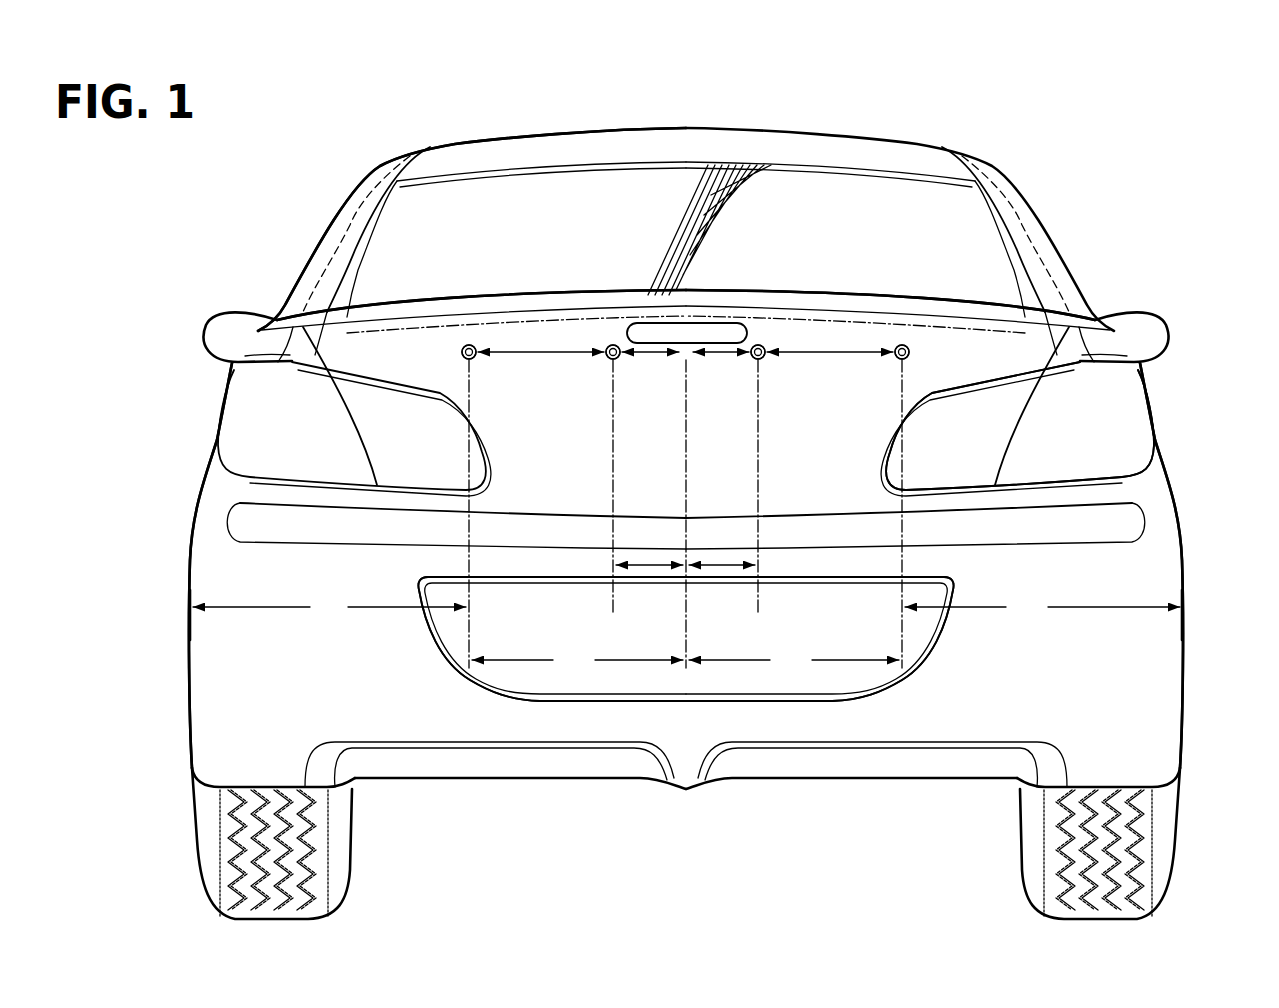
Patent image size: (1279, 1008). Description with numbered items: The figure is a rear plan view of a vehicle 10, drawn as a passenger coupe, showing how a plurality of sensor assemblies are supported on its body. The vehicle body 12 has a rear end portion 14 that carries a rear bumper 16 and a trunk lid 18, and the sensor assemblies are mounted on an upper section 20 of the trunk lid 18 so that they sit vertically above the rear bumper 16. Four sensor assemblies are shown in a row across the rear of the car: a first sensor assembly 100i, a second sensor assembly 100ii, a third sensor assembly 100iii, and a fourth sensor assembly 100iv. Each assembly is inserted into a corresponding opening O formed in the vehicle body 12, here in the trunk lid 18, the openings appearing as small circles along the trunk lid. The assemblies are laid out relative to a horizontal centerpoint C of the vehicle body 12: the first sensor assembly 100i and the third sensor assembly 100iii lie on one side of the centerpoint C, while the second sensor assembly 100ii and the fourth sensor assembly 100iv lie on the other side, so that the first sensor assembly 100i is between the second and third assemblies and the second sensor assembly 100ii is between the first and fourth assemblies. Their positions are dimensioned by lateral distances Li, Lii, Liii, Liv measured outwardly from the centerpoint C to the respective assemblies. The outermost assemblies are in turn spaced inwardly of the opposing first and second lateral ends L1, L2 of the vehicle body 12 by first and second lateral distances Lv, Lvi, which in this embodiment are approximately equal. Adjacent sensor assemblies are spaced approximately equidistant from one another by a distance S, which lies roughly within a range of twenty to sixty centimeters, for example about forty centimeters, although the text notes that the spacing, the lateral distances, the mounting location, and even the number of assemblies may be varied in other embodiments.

The vehicle 10 is at (1017, 110).
The vehicle body 12 is at (183, 506).
The rear end portion 14 is at (1203, 705).
The rear bumper 16 is at (940, 710).
The trunk lid 18 is at (957, 297).
The upper section 20 is at (970, 350).
The first sensor assembly 100i is at (603, 340).
The second sensor assembly 100ii is at (747, 335).
The third sensor assembly 100iii is at (455, 352).
The fourth sensor assembly 100iv is at (887, 343).
The opening O is at (470, 345).
The distance between adjacent sensor assemblies S is at (538, 350).
The centerpoint C is at (683, 350).
The lateral distance Li is at (650, 568).
The lateral distance Lii is at (718, 568).
The lateral distance Liii is at (577, 661).
The lateral distance Liv is at (794, 661).
The first lateral distance Lv is at (329, 607).
The second lateral distance Lvi is at (1042, 607).
The first lateral end L1 is at (189, 613).
The second lateral end L2 is at (1186, 598).